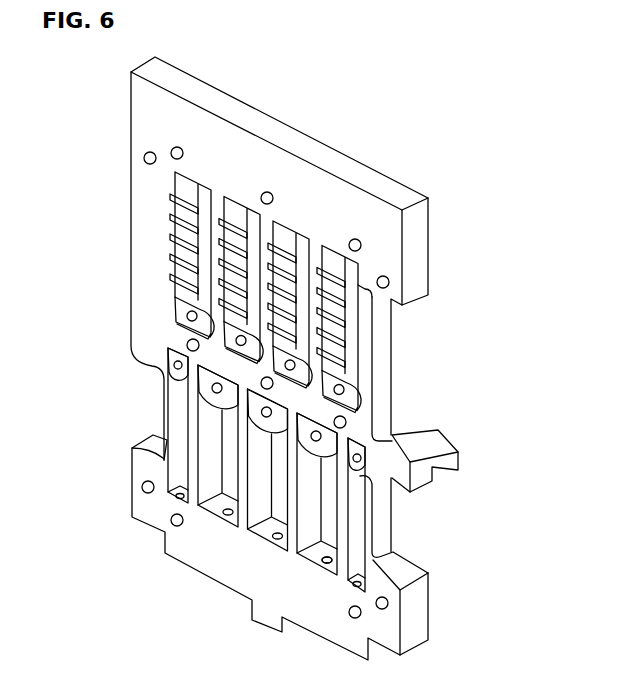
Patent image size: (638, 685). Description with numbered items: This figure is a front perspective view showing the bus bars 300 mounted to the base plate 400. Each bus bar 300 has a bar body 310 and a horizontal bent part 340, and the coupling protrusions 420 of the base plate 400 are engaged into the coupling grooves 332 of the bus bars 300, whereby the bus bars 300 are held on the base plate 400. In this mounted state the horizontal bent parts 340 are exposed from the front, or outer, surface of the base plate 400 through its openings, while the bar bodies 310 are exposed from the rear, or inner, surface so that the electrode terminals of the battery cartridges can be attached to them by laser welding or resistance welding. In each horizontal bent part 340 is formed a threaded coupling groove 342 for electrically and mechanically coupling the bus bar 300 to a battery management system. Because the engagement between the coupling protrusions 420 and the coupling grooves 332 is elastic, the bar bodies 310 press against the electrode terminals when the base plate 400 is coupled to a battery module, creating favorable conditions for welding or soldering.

The bus bar 300 is at (326, 546).
The bar body 310 is at (225, 418).
The coupling groove 332 is at (227, 523).
The horizontal bent part 340 is at (178, 310).
The coupling groove 342 is at (372, 380).
The base plate 400 is at (417, 238).
The coupling protrusion 420 is at (275, 550).